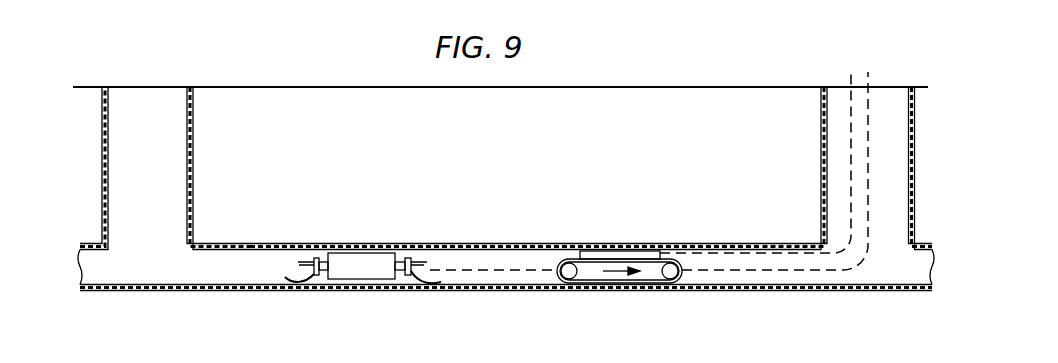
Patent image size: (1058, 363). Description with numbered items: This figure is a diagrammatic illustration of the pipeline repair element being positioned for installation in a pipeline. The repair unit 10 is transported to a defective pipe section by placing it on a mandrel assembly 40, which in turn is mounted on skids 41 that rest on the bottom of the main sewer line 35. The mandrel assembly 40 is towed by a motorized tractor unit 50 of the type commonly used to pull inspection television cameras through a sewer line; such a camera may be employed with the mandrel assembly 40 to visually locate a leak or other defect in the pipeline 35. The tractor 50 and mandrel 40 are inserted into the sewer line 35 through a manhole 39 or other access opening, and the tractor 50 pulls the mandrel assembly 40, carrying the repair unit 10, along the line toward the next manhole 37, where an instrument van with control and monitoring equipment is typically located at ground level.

The manhole 39 is at (158, 102).
The next manhole 37 is at (891, 97).
The pipeline 35 is at (810, 290).
The repair unit 10 is at (363, 268).
The mandrel assembly 40 is at (403, 283).
The skids 41 is at (311, 288).
The motorized tractor unit 50 is at (648, 272).